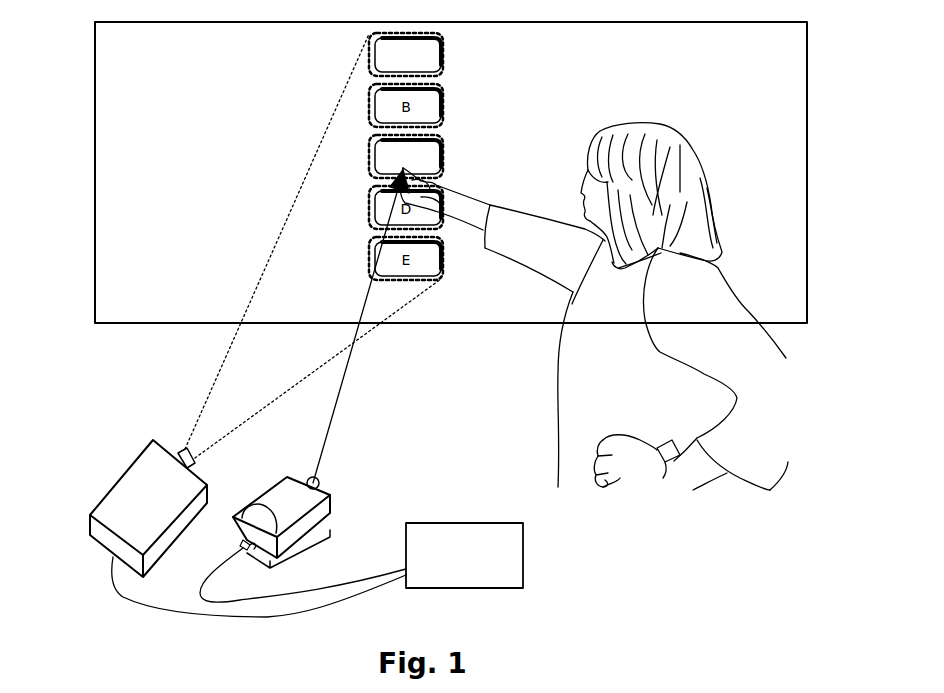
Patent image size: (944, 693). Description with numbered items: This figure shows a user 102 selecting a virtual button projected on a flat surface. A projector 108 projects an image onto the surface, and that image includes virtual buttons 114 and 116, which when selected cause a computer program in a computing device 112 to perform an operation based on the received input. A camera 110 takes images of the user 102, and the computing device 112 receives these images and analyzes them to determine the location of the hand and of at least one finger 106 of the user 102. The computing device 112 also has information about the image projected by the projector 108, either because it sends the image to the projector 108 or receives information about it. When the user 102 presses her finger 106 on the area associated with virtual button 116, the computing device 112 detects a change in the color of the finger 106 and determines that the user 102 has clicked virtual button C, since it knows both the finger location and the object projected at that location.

The user 102 is at (573, 390).
The finger 106 is at (403, 168).
The projector 108 is at (133, 487).
The camera 110 is at (285, 498).
The computing device 112 is at (512, 572).
The virtual button 114 is at (432, 57).
The virtual button 116 is at (432, 153).